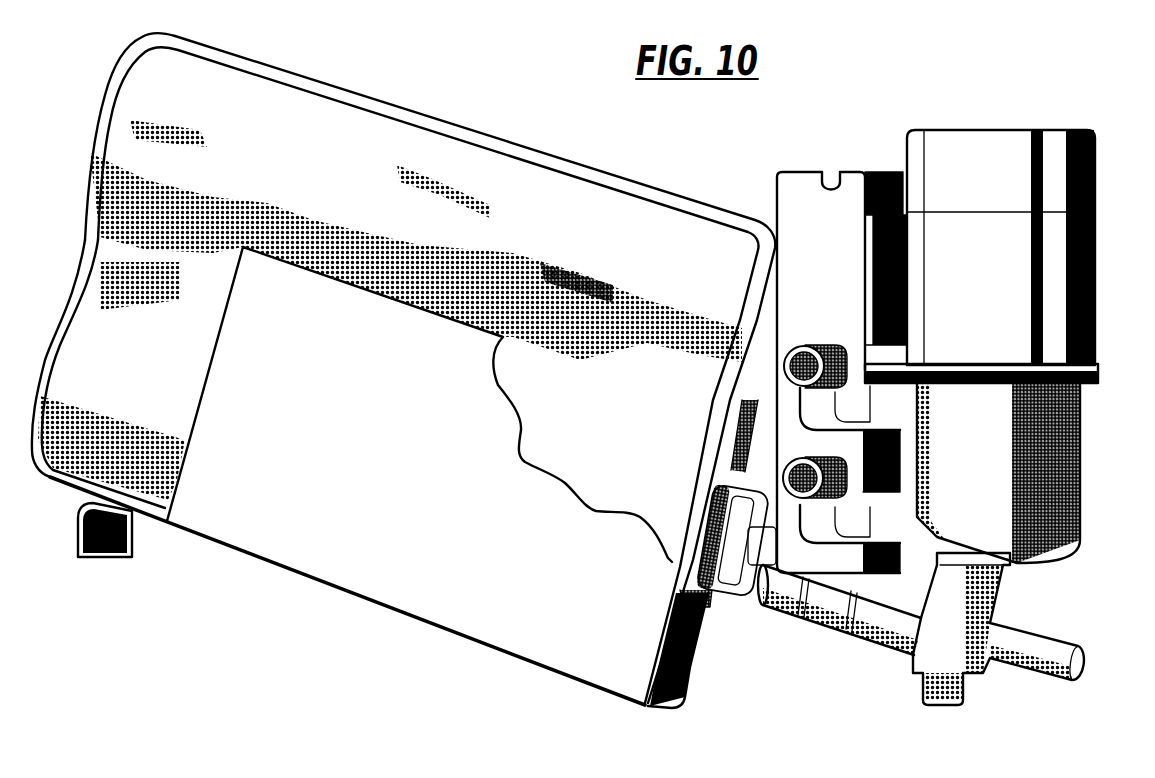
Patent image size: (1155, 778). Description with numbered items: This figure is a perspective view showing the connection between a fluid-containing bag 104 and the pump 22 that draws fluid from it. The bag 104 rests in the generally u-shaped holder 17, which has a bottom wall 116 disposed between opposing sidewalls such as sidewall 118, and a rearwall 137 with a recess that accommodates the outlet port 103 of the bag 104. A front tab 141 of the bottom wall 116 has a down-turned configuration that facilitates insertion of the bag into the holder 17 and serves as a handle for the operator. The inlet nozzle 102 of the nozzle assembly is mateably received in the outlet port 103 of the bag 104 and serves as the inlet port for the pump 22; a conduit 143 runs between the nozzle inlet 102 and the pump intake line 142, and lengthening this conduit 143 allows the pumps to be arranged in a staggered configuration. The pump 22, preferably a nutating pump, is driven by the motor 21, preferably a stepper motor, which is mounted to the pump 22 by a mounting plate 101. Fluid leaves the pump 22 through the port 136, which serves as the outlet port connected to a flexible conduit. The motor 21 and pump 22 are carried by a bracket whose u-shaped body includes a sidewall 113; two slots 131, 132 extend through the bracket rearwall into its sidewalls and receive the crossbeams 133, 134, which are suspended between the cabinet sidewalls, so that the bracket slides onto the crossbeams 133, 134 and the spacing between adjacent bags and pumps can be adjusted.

The holder 17 is at (369, 610).
The motor 21 is at (978, 130).
The pump 22 is at (1080, 487).
The mounting plate 101 is at (875, 172).
The inlet nozzle 102 is at (745, 613).
The outlet port 103 is at (740, 618).
The fluid-containing bag 104 is at (414, 104).
The sidewall 113 is at (783, 172).
The bottom wall 116 is at (148, 530).
The sidewall 118 is at (308, 535).
The slot 131 is at (842, 400).
The slot 132 is at (838, 510).
The crossbeam 133 is at (800, 345).
The crossbeam 134 is at (813, 463).
The port 136 is at (1025, 668).
The rearwall 137 is at (672, 703).
The front tab 141 is at (105, 560).
The pump intake line 142 is at (982, 592).
The conduit 143 is at (870, 618).